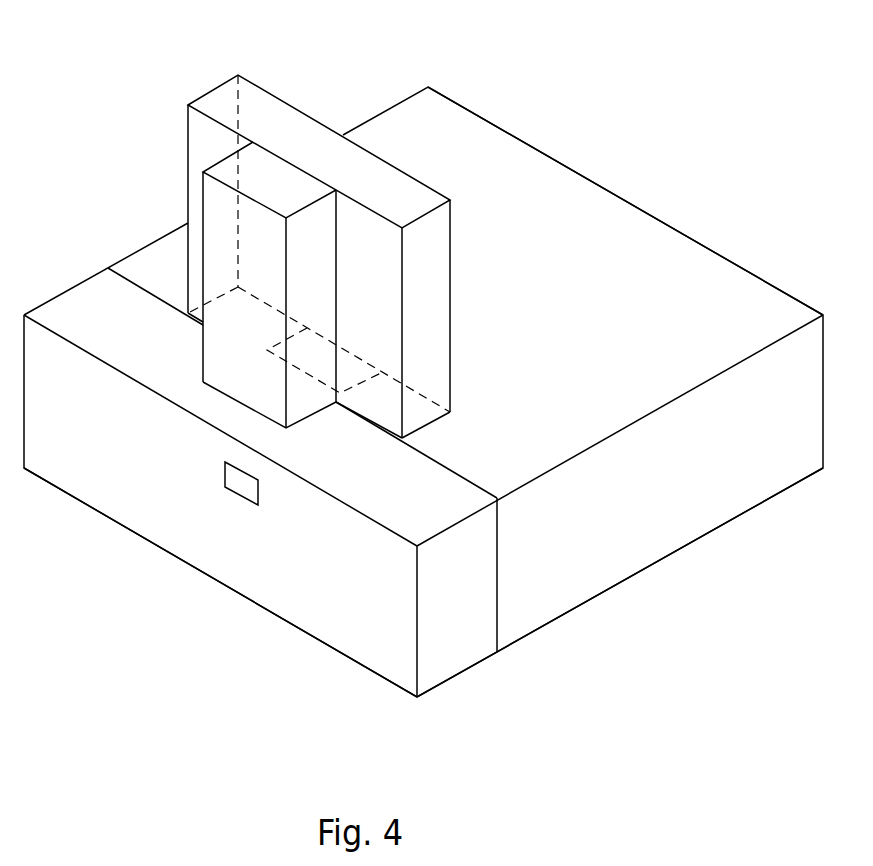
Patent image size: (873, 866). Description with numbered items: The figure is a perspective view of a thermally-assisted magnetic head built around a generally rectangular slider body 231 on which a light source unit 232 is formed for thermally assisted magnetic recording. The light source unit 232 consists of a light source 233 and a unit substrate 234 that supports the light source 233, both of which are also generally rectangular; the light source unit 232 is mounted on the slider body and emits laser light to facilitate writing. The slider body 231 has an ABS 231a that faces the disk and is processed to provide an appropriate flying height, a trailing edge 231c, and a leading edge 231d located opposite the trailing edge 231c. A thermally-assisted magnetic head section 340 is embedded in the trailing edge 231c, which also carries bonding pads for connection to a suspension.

The slider body 231 is at (640, 188).
The ABS 231a is at (572, 610).
The trailing edge 231c is at (373, 597).
The leading edge 231d is at (512, 132).
The light source unit 232 is at (90, 35).
The light source 233 is at (225, 171).
The unit substrate 234 is at (228, 95).
The thermally-assisted magnetic head section 340 is at (233, 485).